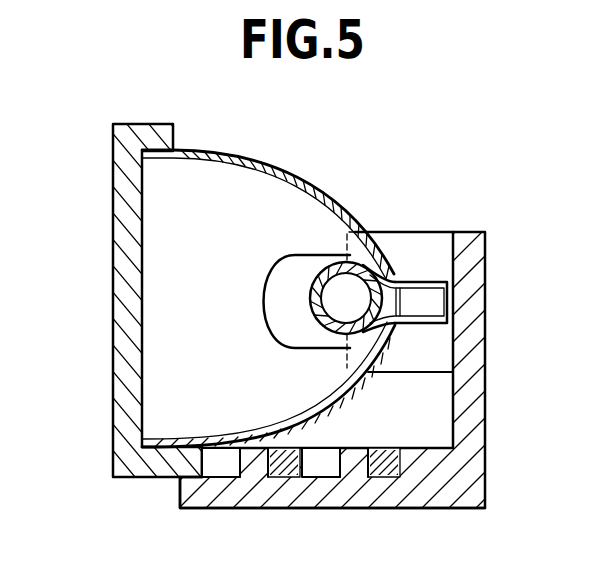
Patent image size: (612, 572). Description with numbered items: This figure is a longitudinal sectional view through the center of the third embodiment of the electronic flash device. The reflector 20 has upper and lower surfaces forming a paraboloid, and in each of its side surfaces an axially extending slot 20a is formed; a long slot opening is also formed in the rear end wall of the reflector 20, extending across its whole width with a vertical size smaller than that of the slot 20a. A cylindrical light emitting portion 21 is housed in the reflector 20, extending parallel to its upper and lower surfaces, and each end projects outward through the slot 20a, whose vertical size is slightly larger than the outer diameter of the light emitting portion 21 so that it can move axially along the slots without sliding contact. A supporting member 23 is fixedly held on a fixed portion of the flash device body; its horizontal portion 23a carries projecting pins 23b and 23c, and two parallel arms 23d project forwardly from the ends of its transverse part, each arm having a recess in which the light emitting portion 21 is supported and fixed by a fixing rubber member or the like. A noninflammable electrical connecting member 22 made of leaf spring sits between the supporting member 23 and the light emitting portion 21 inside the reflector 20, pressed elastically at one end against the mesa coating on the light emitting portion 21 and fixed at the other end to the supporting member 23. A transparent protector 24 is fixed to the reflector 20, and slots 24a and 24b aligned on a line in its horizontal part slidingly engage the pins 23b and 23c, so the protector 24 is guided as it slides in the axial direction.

The reflector 20 is at (270, 167).
The axially extending slot 20a is at (302, 265).
The light emitting portion 21 is at (350, 270).
The electrical connecting member 22 is at (431, 283).
The supporting member 23 is at (466, 360).
The horizontal portion 23a is at (358, 490).
The pin 23b is at (258, 455).
The pin 23c is at (363, 457).
The arm 23d is at (430, 238).
The protector 24 is at (120, 203).
The slot 24a is at (220, 463).
The slot 24b is at (317, 460).